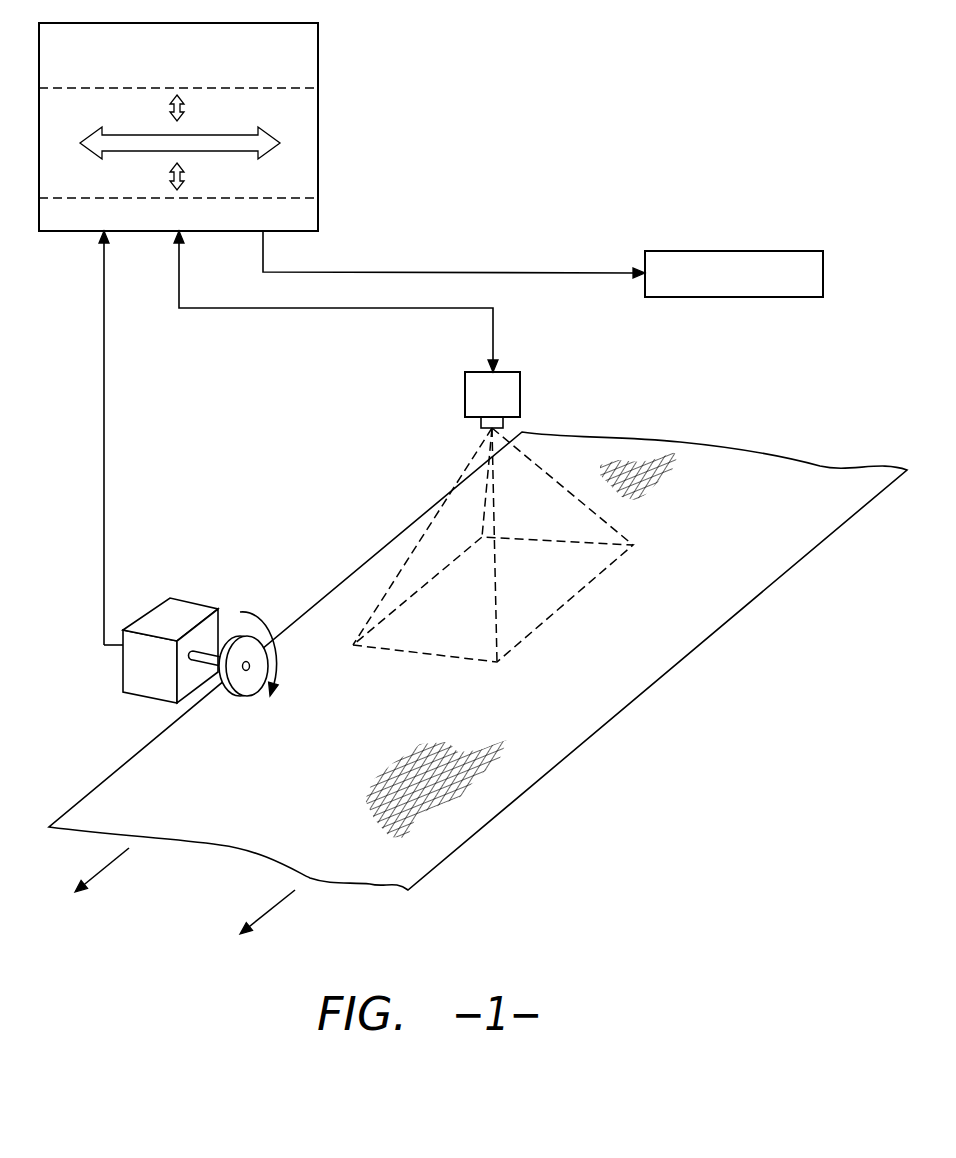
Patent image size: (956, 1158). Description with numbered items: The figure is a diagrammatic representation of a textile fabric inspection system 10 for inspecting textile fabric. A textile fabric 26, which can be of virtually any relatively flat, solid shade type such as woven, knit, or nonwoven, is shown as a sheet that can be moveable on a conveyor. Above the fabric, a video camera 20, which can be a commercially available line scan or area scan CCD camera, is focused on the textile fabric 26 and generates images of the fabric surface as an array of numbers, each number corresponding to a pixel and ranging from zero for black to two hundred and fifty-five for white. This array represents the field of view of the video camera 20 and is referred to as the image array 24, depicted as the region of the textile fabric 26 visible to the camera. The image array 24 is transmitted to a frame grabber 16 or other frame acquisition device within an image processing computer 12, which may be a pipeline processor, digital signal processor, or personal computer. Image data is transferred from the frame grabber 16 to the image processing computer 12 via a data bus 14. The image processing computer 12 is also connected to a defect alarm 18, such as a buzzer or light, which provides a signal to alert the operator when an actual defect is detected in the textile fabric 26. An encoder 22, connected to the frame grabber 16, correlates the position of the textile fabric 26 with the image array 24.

The textile fabric inspection system 10 is at (661, 117).
The image processing computer 12 is at (320, 59).
The data bus 14 is at (320, 155).
The frame grabber 16 is at (320, 221).
The defect alarm 18 is at (730, 251).
The video camera 20 is at (522, 398).
The encoder 22 is at (180, 598).
The image array 24 is at (493, 520).
The textile fabric 26 is at (740, 613).